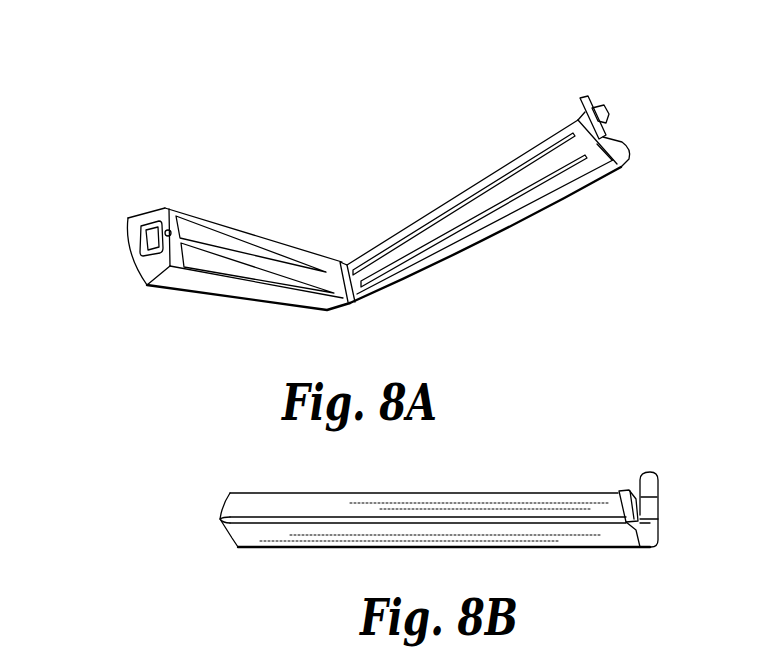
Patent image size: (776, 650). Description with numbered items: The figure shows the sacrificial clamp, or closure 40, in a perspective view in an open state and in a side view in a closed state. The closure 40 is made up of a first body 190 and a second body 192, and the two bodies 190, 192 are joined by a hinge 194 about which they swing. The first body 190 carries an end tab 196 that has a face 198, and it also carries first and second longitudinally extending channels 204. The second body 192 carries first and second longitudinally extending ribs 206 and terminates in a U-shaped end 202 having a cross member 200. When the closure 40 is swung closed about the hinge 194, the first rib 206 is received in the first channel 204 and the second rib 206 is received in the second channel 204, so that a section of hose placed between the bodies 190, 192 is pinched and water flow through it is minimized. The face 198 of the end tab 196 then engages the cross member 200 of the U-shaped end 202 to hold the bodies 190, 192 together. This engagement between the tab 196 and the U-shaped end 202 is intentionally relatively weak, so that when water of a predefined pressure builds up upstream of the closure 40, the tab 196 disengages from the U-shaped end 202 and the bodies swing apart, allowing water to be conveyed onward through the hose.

In FIG. 8A, the closure 40 is at (318, 228).
In FIG. 8B, the closure 40 is at (199, 504).
In FIG. 8A, the first body 190 is at (218, 297).
In FIG. 8B, the first body 190 is at (405, 493).
In FIG. 8A, the second body 192 is at (467, 189).
In FIG. 8B, the second body 192 is at (372, 547).
In FIG. 8A, the hinge 194 is at (352, 301).
In FIG. 8B, the hinge 194 is at (219, 521).
In FIG. 8A, the end tab 196 is at (147, 222).
In FIG. 8B, the end tab 196 is at (631, 474).
In FIG. 8A, the face 198 is at (137, 247).
In FIG. 8A, the cross member 200 is at (580, 98).
In FIG. 8B, the cross member 200 is at (658, 498).
In FIG. 8A, the U-shaped end 202 is at (631, 139).
In FIG. 8B, the U-shaped end 202 is at (658, 519).
In FIG. 8A, the longitudinally extending channels 204 is at (222, 236).
In FIG. 8A, the longitudinally extending ribs 206 is at (420, 219).
In FIG. 8B, the longitudinally extending ribs 206 is at (523, 515).